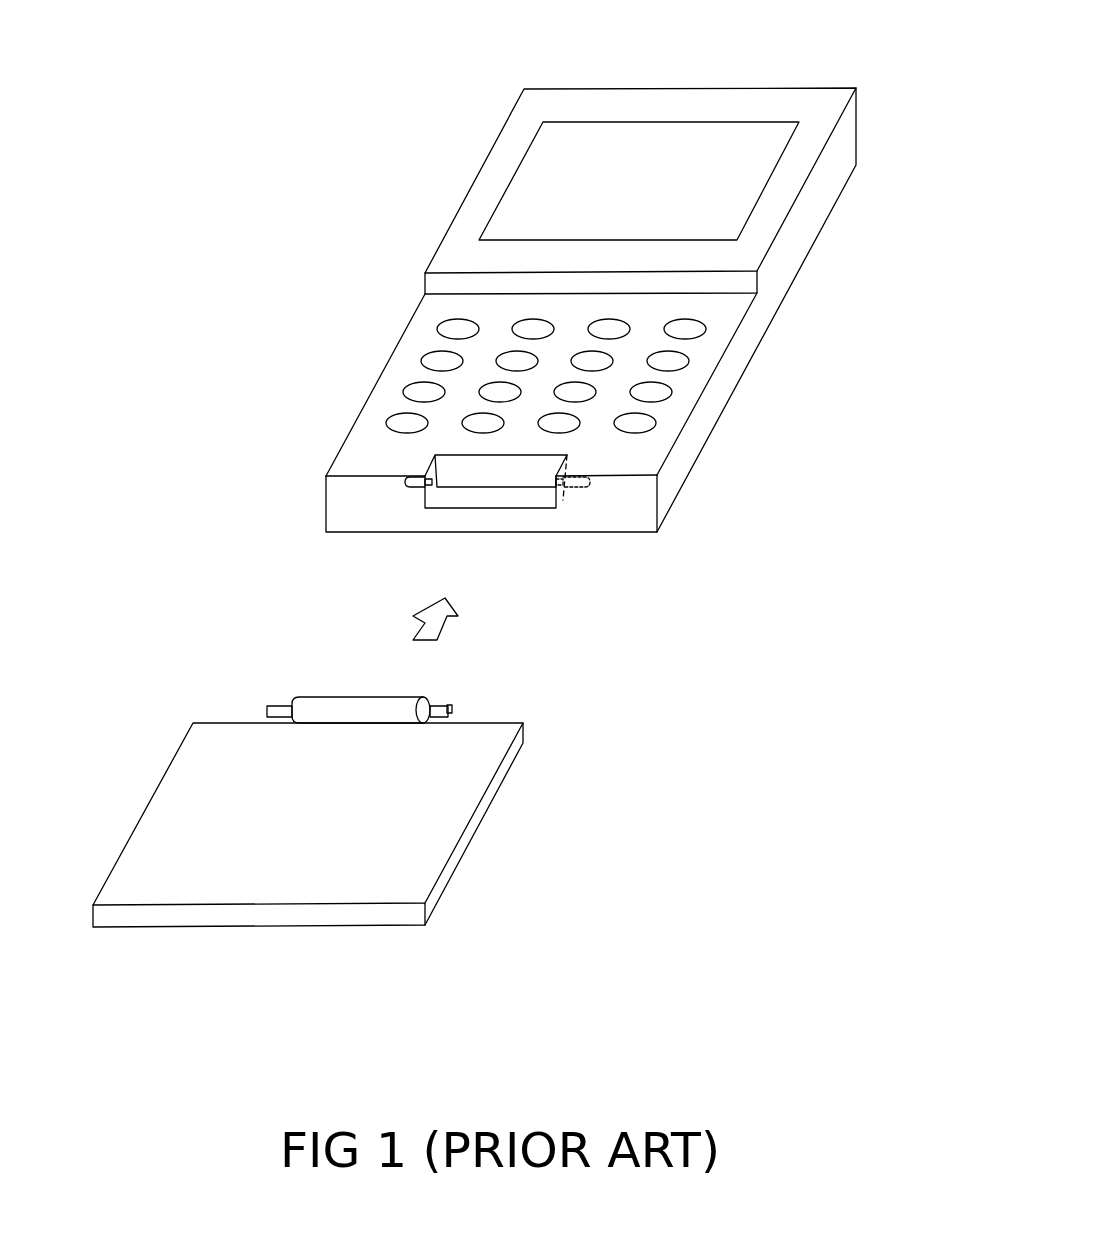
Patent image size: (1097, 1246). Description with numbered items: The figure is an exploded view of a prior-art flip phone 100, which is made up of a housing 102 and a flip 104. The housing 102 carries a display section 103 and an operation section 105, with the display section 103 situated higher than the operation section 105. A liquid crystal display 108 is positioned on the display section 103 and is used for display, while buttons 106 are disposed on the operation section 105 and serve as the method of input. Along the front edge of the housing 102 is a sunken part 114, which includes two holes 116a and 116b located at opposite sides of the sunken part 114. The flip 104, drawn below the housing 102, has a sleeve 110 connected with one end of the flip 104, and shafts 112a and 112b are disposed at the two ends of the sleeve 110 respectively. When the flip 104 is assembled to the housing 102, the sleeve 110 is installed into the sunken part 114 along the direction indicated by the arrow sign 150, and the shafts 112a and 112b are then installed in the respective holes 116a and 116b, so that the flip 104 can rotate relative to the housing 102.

The flip phone 100 is at (888, 29).
The housing 102 is at (820, 185).
The display section 103 is at (600, 100).
The flip 104 is at (492, 788).
The operation section 105 is at (734, 312).
The buttons 106 is at (690, 330).
The liquid crystal display 108 is at (657, 137).
The sleeve 110 is at (362, 710).
The shaft 112a is at (440, 708).
The shaft 112b is at (273, 708).
The sunken part 114 is at (515, 492).
The hole 116a is at (577, 490).
The hole 116b is at (418, 490).
The arrow sign 150 is at (433, 622).